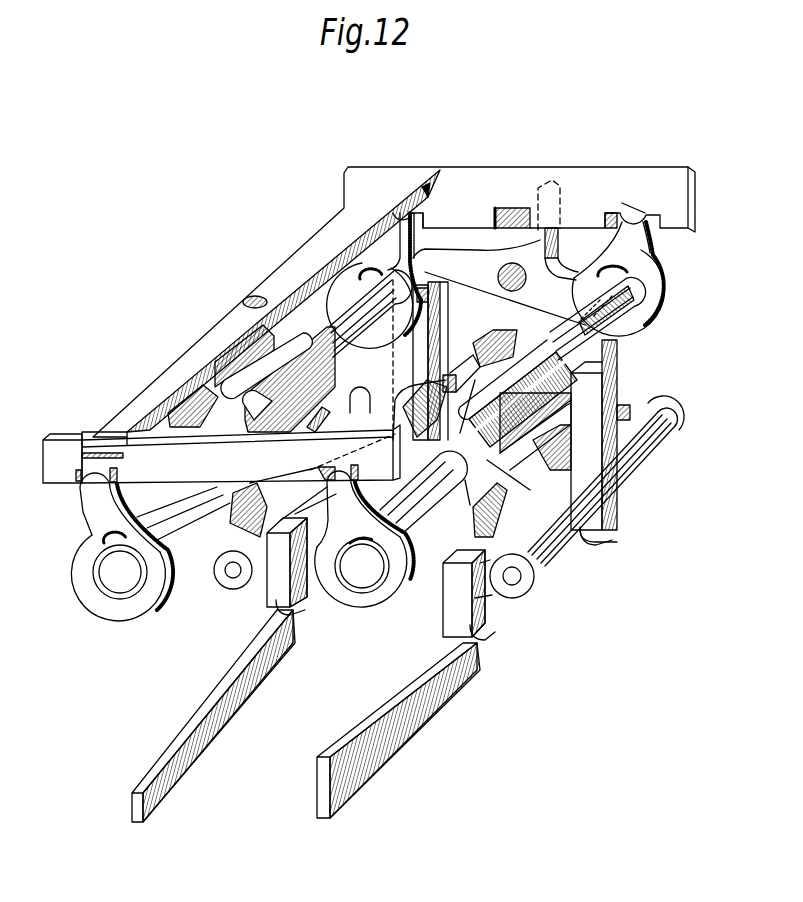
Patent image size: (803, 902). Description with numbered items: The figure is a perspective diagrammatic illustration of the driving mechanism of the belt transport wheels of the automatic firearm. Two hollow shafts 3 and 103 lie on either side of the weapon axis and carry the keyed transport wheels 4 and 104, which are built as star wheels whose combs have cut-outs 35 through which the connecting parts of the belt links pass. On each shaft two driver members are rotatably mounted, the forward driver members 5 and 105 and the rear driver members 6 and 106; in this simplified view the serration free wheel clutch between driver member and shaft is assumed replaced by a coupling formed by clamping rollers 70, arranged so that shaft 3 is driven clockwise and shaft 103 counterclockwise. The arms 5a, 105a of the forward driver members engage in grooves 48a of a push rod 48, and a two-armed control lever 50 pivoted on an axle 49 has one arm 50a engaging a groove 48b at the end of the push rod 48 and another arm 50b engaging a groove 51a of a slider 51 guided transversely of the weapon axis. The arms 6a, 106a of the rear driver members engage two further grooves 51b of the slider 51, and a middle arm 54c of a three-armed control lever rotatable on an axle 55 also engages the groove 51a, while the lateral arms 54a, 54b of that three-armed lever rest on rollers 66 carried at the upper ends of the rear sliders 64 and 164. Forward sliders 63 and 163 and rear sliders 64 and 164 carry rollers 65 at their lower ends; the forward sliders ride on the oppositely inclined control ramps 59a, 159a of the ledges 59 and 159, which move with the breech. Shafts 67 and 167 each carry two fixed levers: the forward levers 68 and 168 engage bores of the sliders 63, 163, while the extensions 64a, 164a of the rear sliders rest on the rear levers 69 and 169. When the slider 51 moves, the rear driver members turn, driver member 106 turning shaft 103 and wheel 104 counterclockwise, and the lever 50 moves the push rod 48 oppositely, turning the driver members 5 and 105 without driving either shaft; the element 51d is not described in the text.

The hollow shaft 3 is at (414, 538).
The transport wheel 4 is at (461, 510).
The forward driver member 5 is at (369, 602).
The arm of forward driver member 5a is at (347, 506).
The rear driver member 6 is at (653, 293).
The arm of rear driver member 6a is at (627, 205).
The cut-out 35 is at (518, 492).
The push rod 48 is at (56, 438).
The groove of push rod 48a is at (111, 471).
The end groove of push rod 48b is at (82, 487).
The axle 49 is at (251, 296).
The two-armed control lever 50 is at (213, 335).
The arm of control lever 50a is at (101, 433).
The arm of control lever 50b is at (402, 180).
The slider 51 is at (673, 228).
The groove of slider 51a is at (428, 192).
The further grooves of slider 51b is at (633, 198).
The notch block 51d is at (498, 206).
The lateral arm of control lever 54a is at (614, 304).
The lateral arm of control lever 54b is at (415, 242).
The middle arm of control lever 54c is at (541, 185).
The axle 55 is at (517, 291).
The ledge 59 is at (408, 728).
The control ramp 59a is at (368, 718).
The forward slider 63 is at (486, 606).
The rear slider 64 is at (603, 498).
The extension of rear slider 64a is at (619, 412).
The roller 65 is at (277, 615).
The roller 66 is at (414, 300).
The shaft 67 is at (547, 550).
The forward lever 68 is at (491, 559).
The rear lever 69 is at (667, 405).
The clamping rollers 70 is at (360, 288).
The hollow shaft 103 is at (168, 524).
The transport wheel 104 is at (240, 391).
The forward driver member 105 is at (94, 600).
The arm of forward driver member 105a is at (91, 484).
The rear driver member 106 is at (380, 243).
The arm of rear driver member 106a is at (396, 212).
The ledge 159 is at (222, 735).
The control ramp 159a is at (198, 720).
The forward slider 163 is at (300, 605).
The rear slider 164 is at (418, 343).
The extension of rear slider 164a is at (458, 363).
The shaft 167 is at (300, 505).
The forward lever 168 is at (259, 580).
The rear lever 169 is at (393, 393).